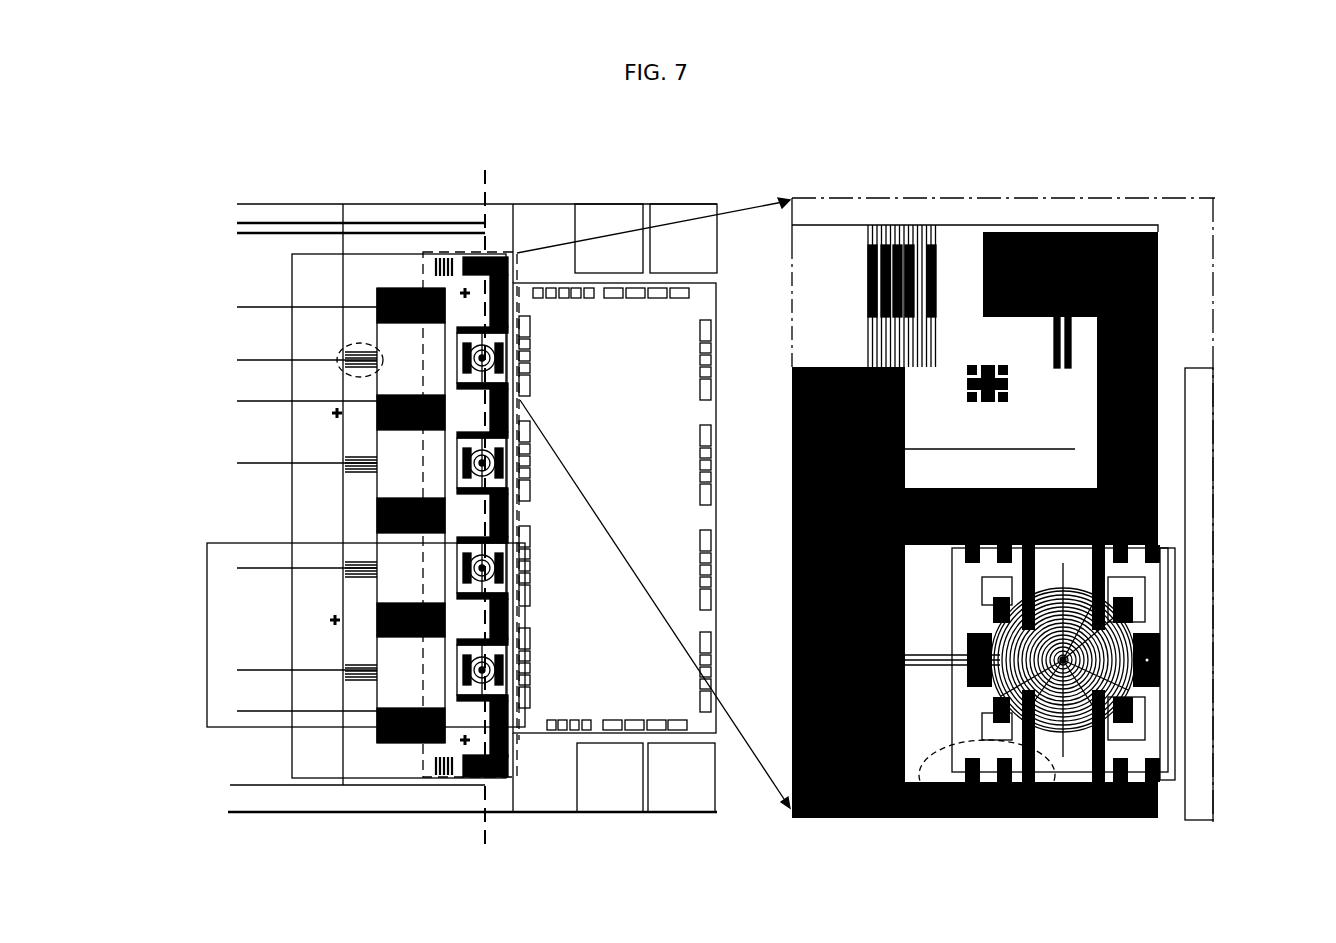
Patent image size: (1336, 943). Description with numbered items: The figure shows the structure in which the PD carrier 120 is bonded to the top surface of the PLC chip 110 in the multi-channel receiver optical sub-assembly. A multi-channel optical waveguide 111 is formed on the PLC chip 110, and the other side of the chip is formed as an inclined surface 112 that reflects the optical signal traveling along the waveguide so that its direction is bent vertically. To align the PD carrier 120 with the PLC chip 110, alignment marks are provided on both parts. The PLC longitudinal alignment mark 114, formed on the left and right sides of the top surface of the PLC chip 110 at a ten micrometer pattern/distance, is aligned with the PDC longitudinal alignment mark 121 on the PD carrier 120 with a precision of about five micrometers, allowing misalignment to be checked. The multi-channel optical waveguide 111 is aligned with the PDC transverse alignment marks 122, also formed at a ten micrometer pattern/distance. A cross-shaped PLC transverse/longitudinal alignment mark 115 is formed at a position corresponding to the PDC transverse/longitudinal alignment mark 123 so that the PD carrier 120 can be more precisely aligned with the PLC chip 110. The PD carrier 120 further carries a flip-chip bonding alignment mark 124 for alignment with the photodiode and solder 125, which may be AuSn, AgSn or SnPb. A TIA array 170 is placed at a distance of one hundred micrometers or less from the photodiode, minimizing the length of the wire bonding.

The PLC chip 110 is at (252, 757).
The multi-channel optical waveguide 111 is at (257, 362).
The inclined surface 112 is at (487, 188).
The PLC longitudinal alignment mark 114 is at (930, 233).
The PLC transverse/longitudinal alignment mark 115 is at (1008, 397).
The PD carrier 120 is at (357, 765).
The PDC longitudinal alignment mark 121 is at (445, 257).
The PDC transverse alignment mark 122 is at (350, 345).
The PDC transverse/longitudinal alignment mark 123 is at (335, 413).
The flip-chip bonding alignment mark 124 is at (935, 818).
The solder 125 is at (1150, 590).
The TIA array 170 is at (600, 700).